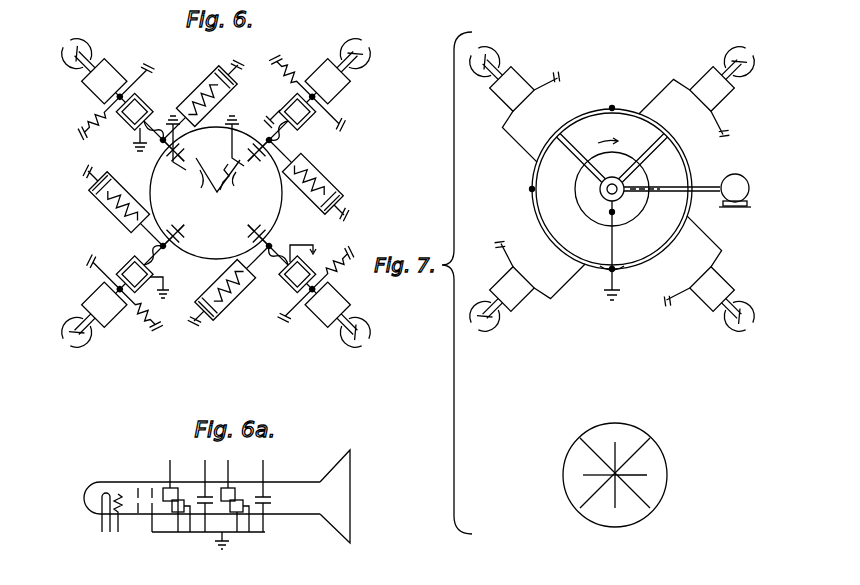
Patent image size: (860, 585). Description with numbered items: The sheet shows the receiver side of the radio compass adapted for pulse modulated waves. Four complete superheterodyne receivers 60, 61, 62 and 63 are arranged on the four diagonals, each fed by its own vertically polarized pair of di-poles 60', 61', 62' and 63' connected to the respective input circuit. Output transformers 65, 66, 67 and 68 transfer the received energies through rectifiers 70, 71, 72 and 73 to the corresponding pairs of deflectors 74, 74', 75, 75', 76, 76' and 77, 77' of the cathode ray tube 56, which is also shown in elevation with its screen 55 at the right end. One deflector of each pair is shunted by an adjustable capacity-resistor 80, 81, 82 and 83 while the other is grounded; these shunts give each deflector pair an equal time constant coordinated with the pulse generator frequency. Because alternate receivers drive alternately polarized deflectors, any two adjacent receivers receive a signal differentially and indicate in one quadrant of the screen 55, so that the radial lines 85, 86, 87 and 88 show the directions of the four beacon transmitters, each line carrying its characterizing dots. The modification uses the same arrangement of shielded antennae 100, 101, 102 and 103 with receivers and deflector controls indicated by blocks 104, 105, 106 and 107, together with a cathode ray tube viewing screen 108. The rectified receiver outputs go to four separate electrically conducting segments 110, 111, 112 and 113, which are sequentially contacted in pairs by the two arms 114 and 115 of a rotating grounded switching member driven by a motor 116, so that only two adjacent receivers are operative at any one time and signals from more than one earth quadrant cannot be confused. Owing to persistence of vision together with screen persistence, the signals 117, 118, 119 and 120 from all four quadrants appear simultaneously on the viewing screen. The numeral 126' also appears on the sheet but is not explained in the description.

In FIG. 6A, the screen 55 is at (350, 492).
In FIG. 6, the cathode ray tube 56 is at (152, 176).
In FIG. 6, the superheterodyne receiver 60 is at (104, 90).
In FIG. 6, the pair of di-poles 60' is at (72, 53).
In FIG. 6, the superheterodyne receiver 61 is at (319, 81).
In FIG. 6, the pair of di-poles 61' is at (357, 53).
In FIG. 6, the superheterodyne receiver 62 is at (328, 296).
In FIG. 6, the pair of di-poles 62' is at (357, 332).
In FIG. 6, the superheterodyne receiver 63 is at (113, 305).
In FIG. 6, the pair of di-poles 63' is at (76, 337).
In FIG. 6, the output transformer 65 is at (140, 106).
In FIG. 6, the output transformer 66 is at (284, 111).
In FIG. 6, the output transformer 67 is at (288, 289).
In FIG. 6, the output transformer 68 is at (140, 289).
In FIG. 6, the rectifier 70 is at (161, 140).
In FIG. 6, the rectifier 71 is at (262, 141).
In FIG. 6, the rectifier 72 is at (262, 271).
In FIG. 6, the rectifier 73 is at (148, 239).
In FIG. 6, the deflector 74 is at (158, 148).
In FIG. 6A, the deflector 74 is at (160, 496).
In FIG. 6, the deflector 74' is at (280, 223).
In FIG. 6A, the deflector 74' is at (170, 531).
In FIG. 6, the deflector 75 is at (279, 145).
In FIG. 6A, the deflector 75 is at (199, 478).
In FIG. 6, the deflector 75' is at (176, 249).
In FIG. 6A, the deflector 75' is at (200, 532).
In FIG. 6, the deflector 76 is at (253, 224).
In FIG. 6A, the deflector 76 is at (223, 480).
In FIG. 6, the deflector 76' is at (179, 164).
In FIG. 6A, the deflector 76' is at (249, 531).
In FIG. 6, the deflector 77 is at (188, 230).
In FIG. 6A, the deflector 77 is at (256, 478).
In FIG. 6, the deflector 77' is at (253, 167).
In FIG. 6A, the deflector 77' is at (275, 520).
In FIG. 6, the capacity-resistor 80 is at (204, 83).
In FIG. 6, the capacity-resistor 81 is at (318, 171).
In FIG. 6, the capacity-resistor 82 is at (225, 305).
In FIG. 6, the capacity-resistor 83 is at (115, 219).
In FIG. 6, the radial line 85 is at (215, 175).
In FIG. 6, the radial line 86 is at (191, 143).
In FIG. 6, the radial line 87 is at (228, 141).
In FIG. 6, the radial line 88 is at (230, 185).
In FIG. 7, the shielded antenna 100 is at (484, 56).
In FIG. 7, the shielded antenna 101 is at (746, 63).
In FIG. 7, the shielded antenna 102 is at (749, 323).
In FIG. 7, the shielded antenna 103 is at (486, 326).
In FIG. 7, the receiver and deflector control block 104 is at (521, 79).
In FIG. 7, the receiver and deflector control block 105 is at (729, 91).
In FIG. 7, the receiver and deflector control block 106 is at (738, 285).
In FIG. 7, the receiver and deflector control block 107 is at (521, 309).
In FIG. 7, the cathode ray tube viewing screen 108 is at (655, 492).
In FIG. 7, the electrically conducting segment 110 is at (571, 121).
In FIG. 7, the electrically conducting segment 111 is at (686, 152).
In FIG. 7, the electrically conducting segment 112 is at (628, 268).
In FIG. 7, the electrically conducting segment 113 is at (597, 273).
In FIG. 7, the arm 114 is at (570, 154).
In FIG. 7, the arm 115 is at (631, 157).
In FIG. 7, the motor 116 is at (749, 190).
In FIG. 7, the signal 117 is at (615, 446).
In FIG. 7, the signal 118 is at (648, 471).
In FIG. 7, the signal 119 is at (617, 500).
In FIG. 7, the signal 120 is at (588, 478).
In FIG. 6A, the lead 126' is at (420, 577).